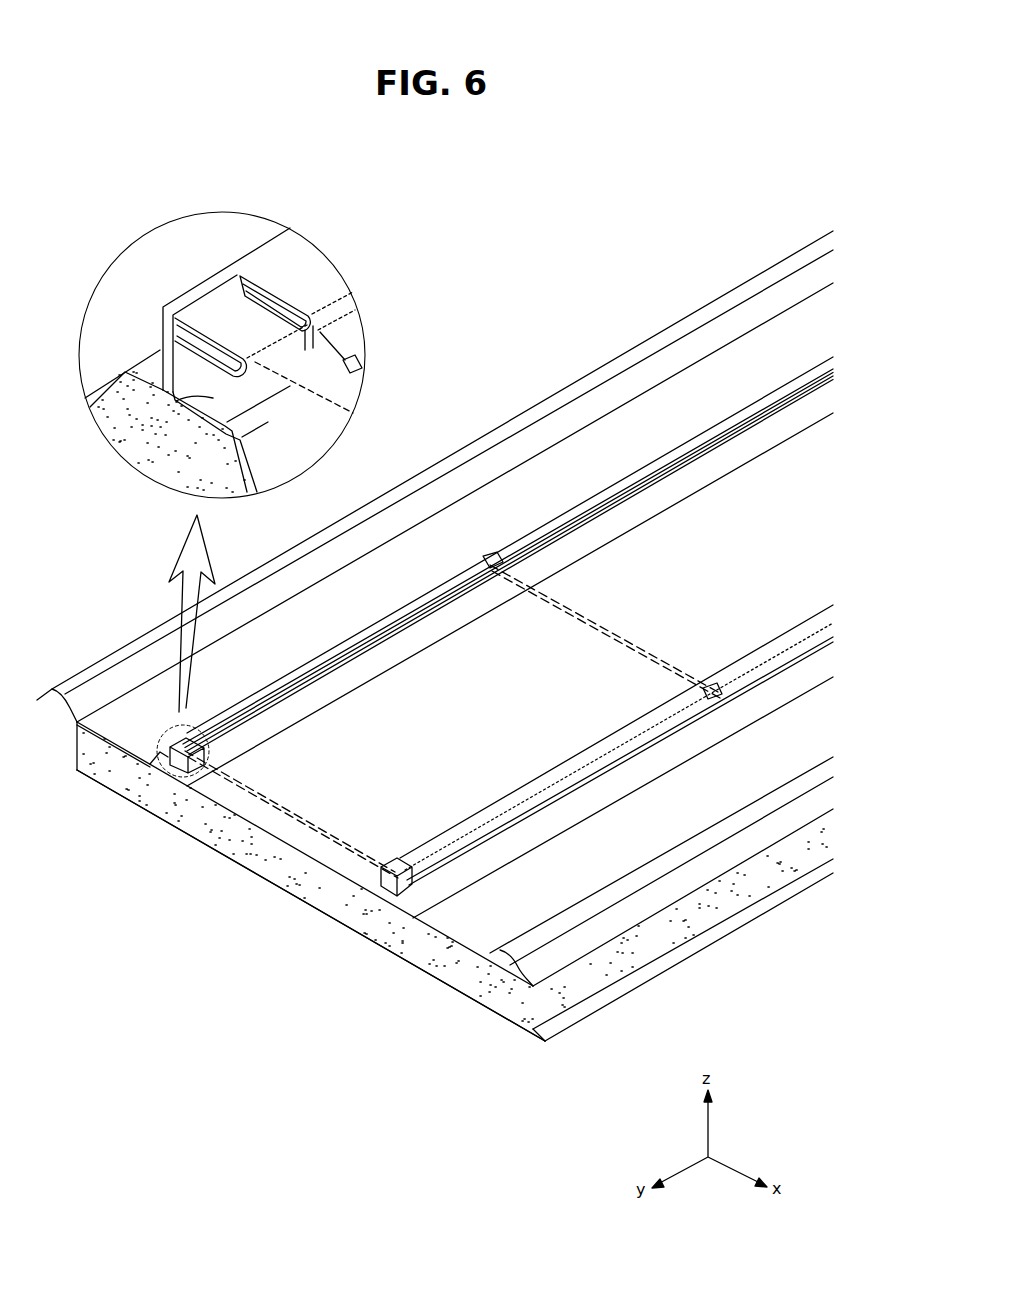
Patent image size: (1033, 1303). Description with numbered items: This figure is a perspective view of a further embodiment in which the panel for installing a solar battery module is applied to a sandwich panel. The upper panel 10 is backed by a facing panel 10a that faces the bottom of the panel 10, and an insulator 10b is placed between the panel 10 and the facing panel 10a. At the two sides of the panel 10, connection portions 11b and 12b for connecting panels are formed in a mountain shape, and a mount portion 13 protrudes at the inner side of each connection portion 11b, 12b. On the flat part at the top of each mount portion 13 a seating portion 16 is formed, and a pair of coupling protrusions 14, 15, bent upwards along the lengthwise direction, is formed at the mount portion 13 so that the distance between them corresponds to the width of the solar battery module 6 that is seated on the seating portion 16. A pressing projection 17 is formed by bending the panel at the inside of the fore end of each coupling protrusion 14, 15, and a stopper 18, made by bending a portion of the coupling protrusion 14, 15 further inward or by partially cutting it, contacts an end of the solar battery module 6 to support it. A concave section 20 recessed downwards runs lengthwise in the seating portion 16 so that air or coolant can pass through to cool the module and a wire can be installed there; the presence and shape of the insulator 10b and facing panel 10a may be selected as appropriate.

The solar battery module 6 is at (335, 836).
The panel 10 is at (162, 862).
The facing panel 10a is at (389, 958).
The insulator 10b is at (449, 960).
The connection portion 11b is at (88, 671).
The connection portion 12b is at (575, 944).
The mount portion 13 is at (580, 543).
The coupling protrusion 14 is at (160, 333).
The coupling protrusion 15 is at (210, 441).
The seating portion 16 is at (124, 448).
The pressing projection 17 is at (327, 328).
The stopper 18 is at (221, 311).
The concave section 20 is at (270, 818).